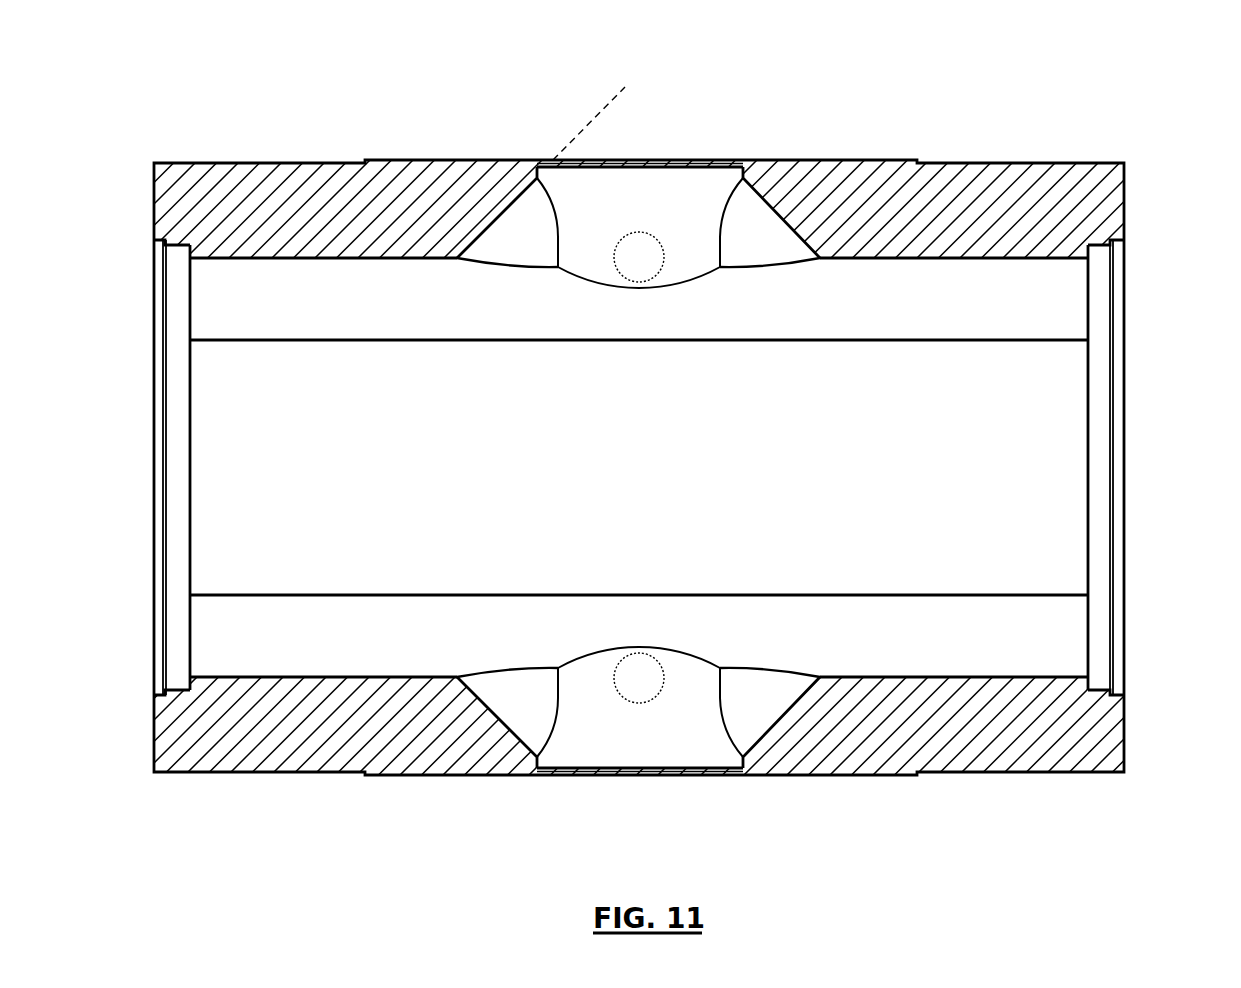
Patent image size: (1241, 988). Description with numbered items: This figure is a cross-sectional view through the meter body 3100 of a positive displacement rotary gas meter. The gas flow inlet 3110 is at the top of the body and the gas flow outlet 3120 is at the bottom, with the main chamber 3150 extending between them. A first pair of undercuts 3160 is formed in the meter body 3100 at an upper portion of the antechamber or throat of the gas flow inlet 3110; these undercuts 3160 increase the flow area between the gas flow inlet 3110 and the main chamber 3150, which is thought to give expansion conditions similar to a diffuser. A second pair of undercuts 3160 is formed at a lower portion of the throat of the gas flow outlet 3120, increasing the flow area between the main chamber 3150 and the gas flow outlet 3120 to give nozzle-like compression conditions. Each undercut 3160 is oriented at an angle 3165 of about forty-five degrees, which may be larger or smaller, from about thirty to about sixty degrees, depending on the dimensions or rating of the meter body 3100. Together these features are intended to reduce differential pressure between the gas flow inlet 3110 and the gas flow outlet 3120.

The meter body 3100 is at (1112, 60).
The gas flow inlet 3110 is at (708, 180).
The gas flow outlet 3120 is at (698, 750).
The main chamber 3150 is at (1050, 468).
The undercuts 3160 is at (510, 248).
The angle 3165 is at (592, 120).